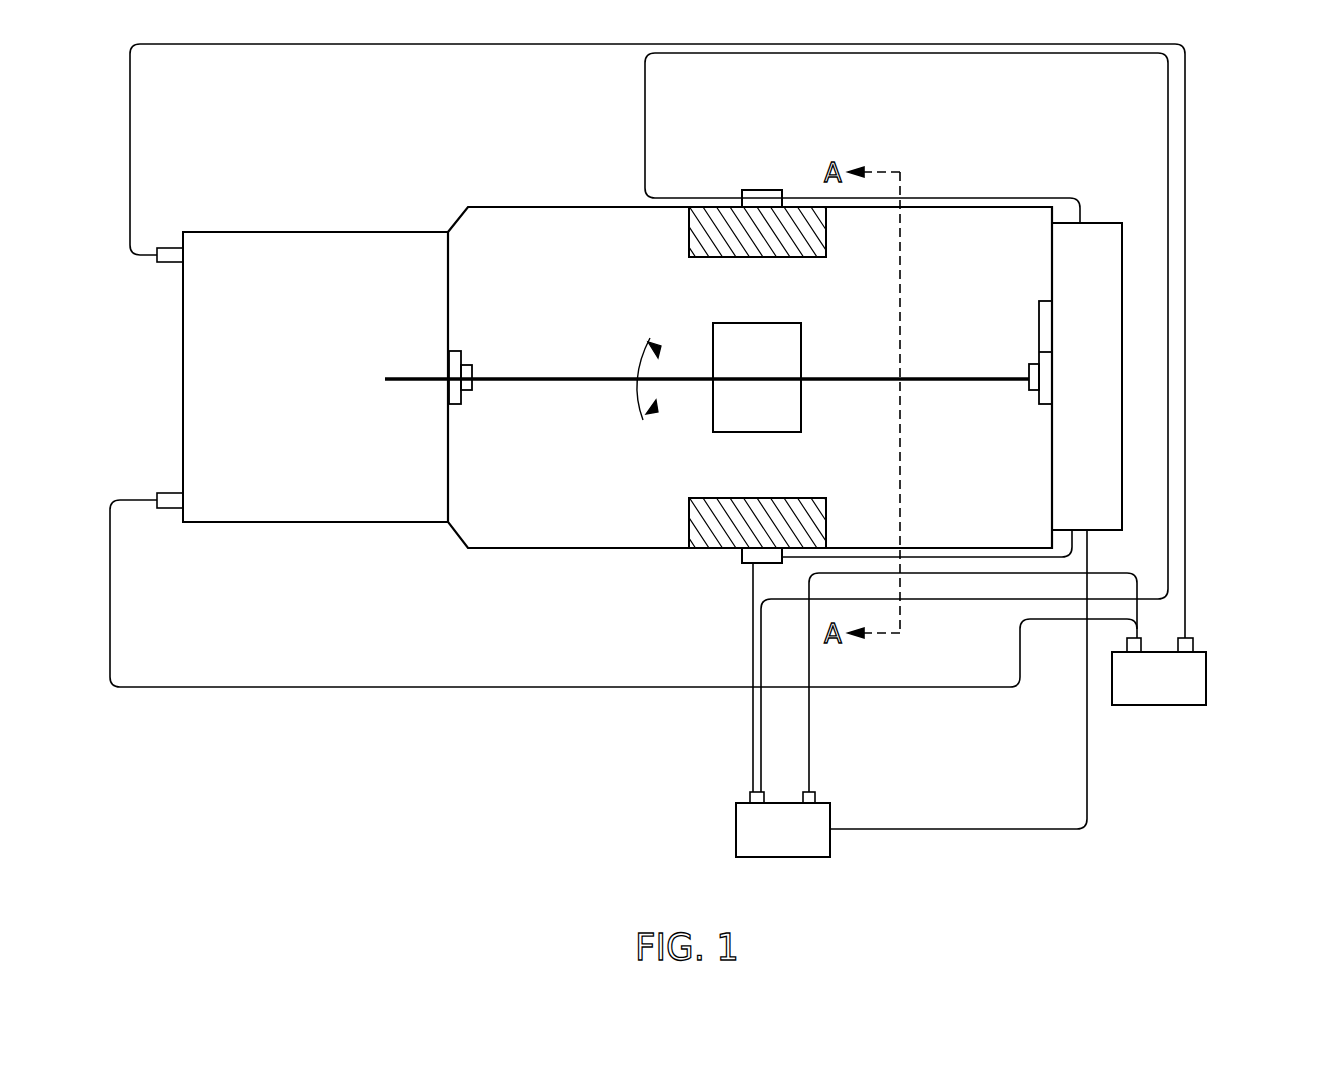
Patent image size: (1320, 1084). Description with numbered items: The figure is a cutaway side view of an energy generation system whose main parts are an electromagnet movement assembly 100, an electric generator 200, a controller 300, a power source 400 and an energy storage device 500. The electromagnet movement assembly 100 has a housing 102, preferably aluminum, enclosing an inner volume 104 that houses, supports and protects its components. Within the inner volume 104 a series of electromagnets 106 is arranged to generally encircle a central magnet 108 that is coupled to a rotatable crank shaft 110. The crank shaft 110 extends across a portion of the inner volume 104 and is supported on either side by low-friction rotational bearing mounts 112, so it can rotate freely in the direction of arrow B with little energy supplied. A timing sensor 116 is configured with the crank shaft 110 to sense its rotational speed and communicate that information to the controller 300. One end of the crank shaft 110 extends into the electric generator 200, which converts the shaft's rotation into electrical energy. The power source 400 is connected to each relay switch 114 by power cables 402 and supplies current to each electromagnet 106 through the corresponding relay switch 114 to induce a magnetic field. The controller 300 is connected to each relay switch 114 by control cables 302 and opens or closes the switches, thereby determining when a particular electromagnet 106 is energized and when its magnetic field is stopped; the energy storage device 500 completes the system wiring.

The electromagnet movement assembly 100 is at (557, 111).
The housing 102 is at (750, 345).
The inner volume 104 is at (511, 233).
The electromagnets 106 is at (808, 258).
The central magnet 108 is at (736, 323).
The crank shaft 110 is at (560, 377).
The rotational bearing mounts 112 is at (465, 364).
The relay switch 114 is at (752, 190).
The timing sensor 116 is at (1040, 316).
The electric generator 200 is at (310, 232).
The controller 300 is at (1105, 223).
The control cables 302 is at (934, 198).
The power source 400 is at (736, 829).
The power cables 402 is at (840, 53).
The energy storage device 500 is at (1206, 682).